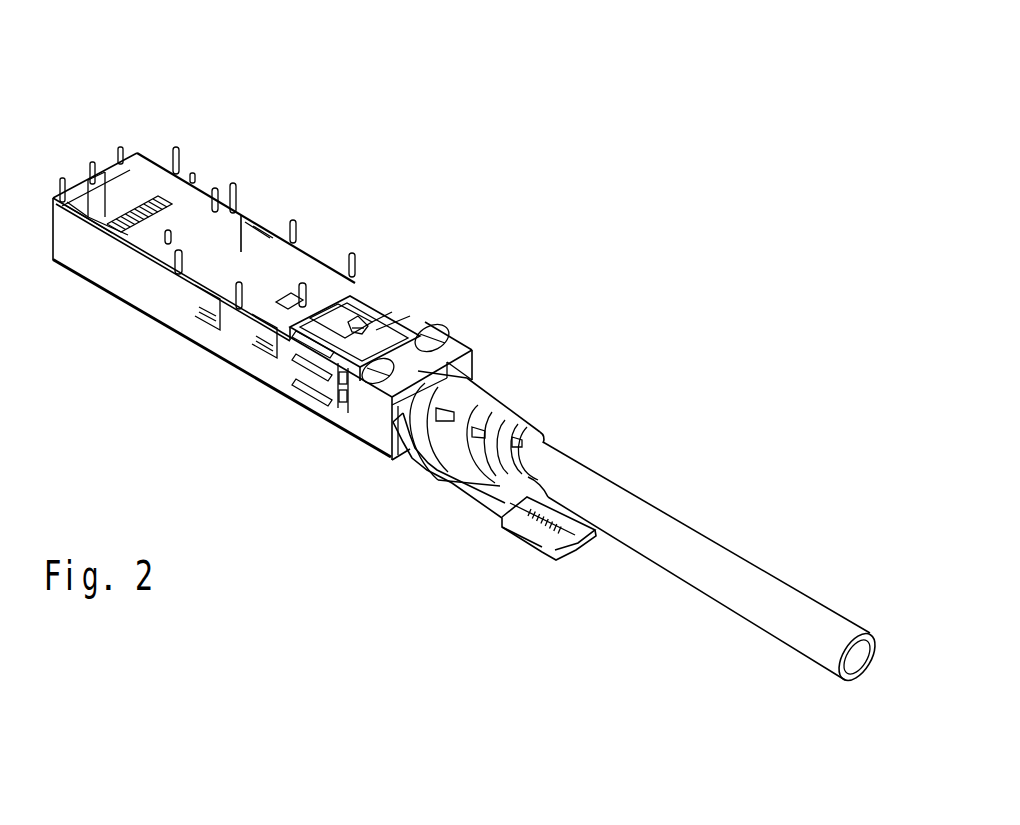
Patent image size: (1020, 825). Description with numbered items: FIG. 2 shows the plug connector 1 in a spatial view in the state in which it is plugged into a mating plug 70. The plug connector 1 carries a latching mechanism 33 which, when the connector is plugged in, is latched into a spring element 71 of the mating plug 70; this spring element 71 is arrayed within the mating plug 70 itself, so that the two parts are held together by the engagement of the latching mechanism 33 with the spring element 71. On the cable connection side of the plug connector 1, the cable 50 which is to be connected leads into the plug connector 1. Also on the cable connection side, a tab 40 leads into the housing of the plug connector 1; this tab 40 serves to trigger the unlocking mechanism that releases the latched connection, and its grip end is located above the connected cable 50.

The plug connector 1 is at (502, 172).
The latching mechanism 33 is at (485, 287).
The tab 40 is at (454, 544).
The cable 50 is at (713, 550).
The mating plug 70 is at (222, 237).
The spring element 71 is at (359, 235).